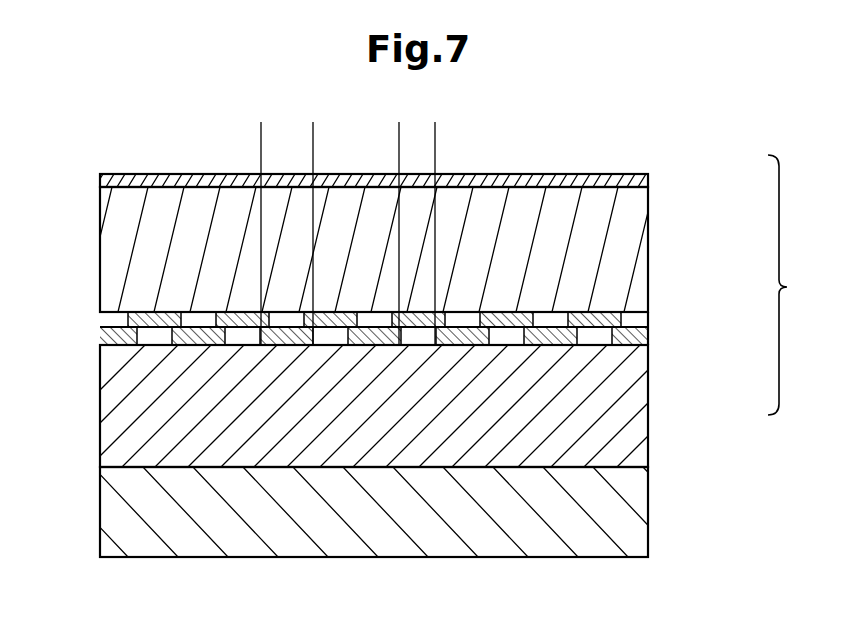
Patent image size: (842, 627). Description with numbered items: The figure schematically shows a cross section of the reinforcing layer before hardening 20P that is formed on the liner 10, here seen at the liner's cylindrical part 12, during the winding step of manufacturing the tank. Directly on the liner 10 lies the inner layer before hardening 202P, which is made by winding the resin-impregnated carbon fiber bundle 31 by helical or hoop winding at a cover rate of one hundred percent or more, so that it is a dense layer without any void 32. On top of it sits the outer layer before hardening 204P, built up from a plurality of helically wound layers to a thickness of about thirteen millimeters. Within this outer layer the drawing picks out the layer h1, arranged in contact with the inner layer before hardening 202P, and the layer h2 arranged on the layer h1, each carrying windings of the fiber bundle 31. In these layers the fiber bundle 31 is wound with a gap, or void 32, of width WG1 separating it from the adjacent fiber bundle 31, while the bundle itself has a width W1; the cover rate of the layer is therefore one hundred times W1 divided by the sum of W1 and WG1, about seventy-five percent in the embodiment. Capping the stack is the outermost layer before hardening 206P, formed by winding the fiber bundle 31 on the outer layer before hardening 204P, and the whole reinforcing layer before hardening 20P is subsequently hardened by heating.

The outermost layer before hardening 206P is at (648, 175).
The outer layer before hardening 204P is at (632, 260).
The inner layer before hardening 202P is at (630, 399).
The liner 10 is at (389, 512).
The cylindrical part 12 is at (633, 508).
The reinforcing layer before hardening 20P is at (804, 285).
The void 32 is at (158, 328).
The fiber bundle 31 is at (108, 333).
The layer h1 is at (648, 339).
The layer h2 is at (648, 319).
The width of the fiber bundle W1 is at (313, 143).
The width of the gap WG1 is at (366, 142).